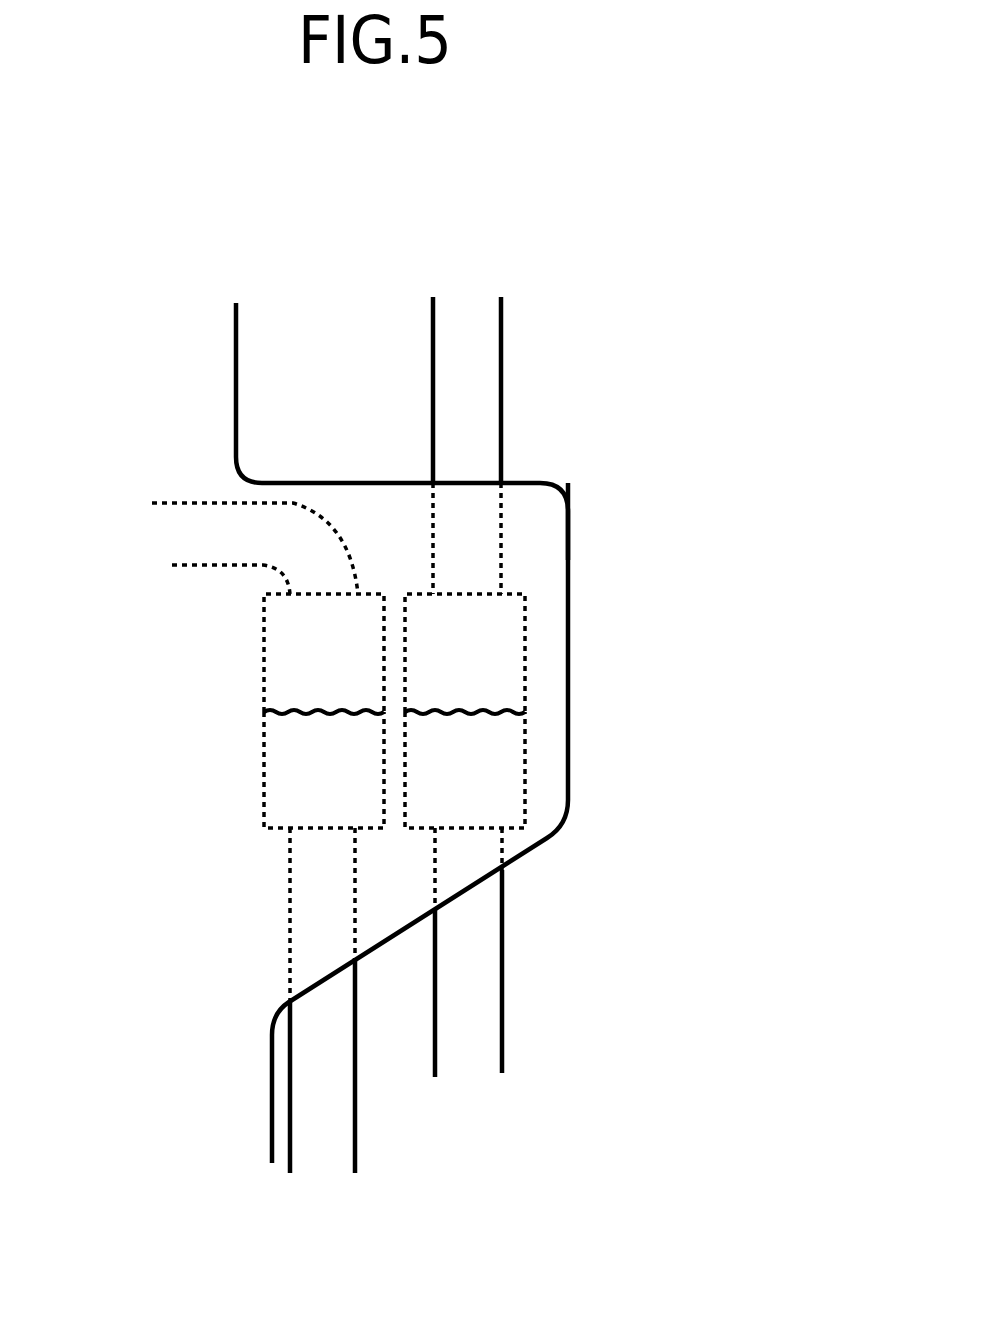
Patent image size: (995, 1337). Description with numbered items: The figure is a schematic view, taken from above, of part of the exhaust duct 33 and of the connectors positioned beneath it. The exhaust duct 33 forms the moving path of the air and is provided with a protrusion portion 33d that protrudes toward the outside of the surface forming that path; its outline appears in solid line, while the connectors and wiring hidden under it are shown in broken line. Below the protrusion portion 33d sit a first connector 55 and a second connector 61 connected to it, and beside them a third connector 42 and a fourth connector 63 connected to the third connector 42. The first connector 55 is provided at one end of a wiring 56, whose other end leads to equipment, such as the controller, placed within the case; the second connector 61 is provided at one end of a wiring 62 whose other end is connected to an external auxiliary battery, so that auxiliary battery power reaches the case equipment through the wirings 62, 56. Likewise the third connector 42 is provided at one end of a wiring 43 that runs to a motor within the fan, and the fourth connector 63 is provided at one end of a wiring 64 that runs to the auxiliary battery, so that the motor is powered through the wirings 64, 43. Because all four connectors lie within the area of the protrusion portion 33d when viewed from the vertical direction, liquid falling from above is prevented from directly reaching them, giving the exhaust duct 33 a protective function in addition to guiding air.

The exhaust duct 33 is at (169, 398).
The protrusion portion 33d is at (596, 540).
The wiring 43 is at (470, 388).
The wiring 56 is at (287, 537).
The first connector 55 is at (293, 652).
The second connector 61 is at (263, 777).
The third connector 42 is at (505, 662).
The fourth connector 63 is at (500, 783).
The wiring 64 is at (478, 985).
The wiring 62 is at (328, 1108).